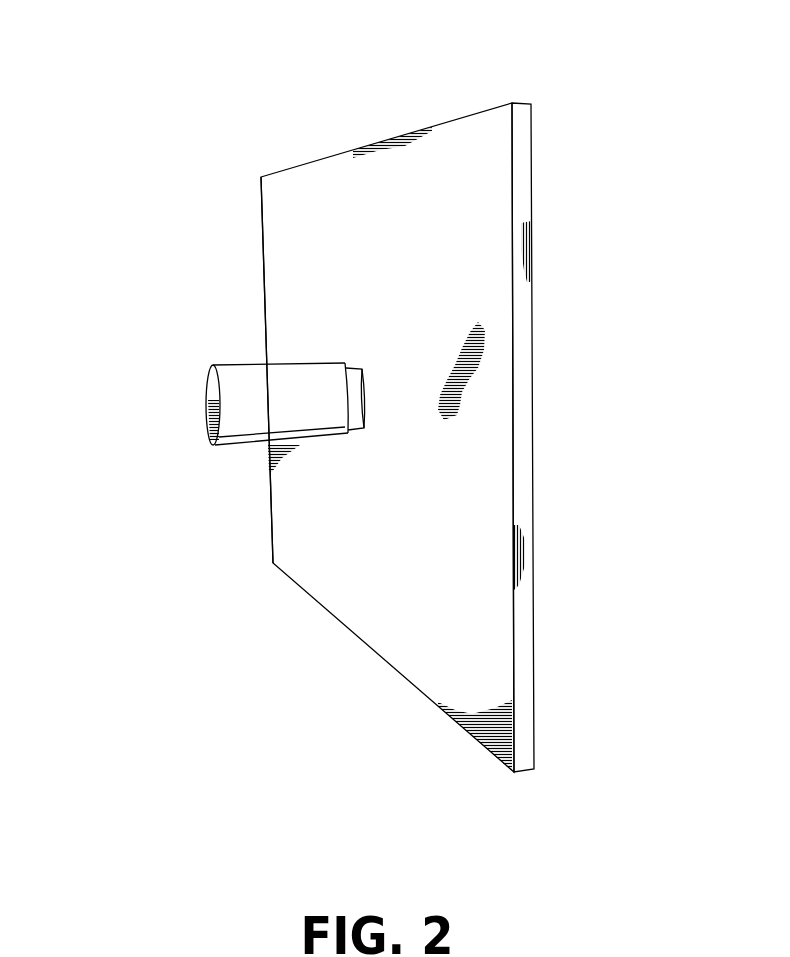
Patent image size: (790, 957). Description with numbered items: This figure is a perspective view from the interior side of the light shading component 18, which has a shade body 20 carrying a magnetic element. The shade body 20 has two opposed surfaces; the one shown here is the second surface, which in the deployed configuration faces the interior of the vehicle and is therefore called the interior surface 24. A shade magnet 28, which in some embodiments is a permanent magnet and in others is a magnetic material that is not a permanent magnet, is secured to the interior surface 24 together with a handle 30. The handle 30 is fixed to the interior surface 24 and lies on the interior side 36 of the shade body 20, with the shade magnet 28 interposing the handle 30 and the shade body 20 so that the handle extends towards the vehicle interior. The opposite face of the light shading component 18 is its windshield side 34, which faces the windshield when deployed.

The light shading component 18 is at (370, 393).
The shade body 20 is at (420, 422).
The interior surface 24 is at (262, 265).
The shade magnet 28 is at (357, 420).
The handle 30 is at (261, 431).
The windshield side 34 is at (622, 631).
The interior side 36 is at (204, 631).